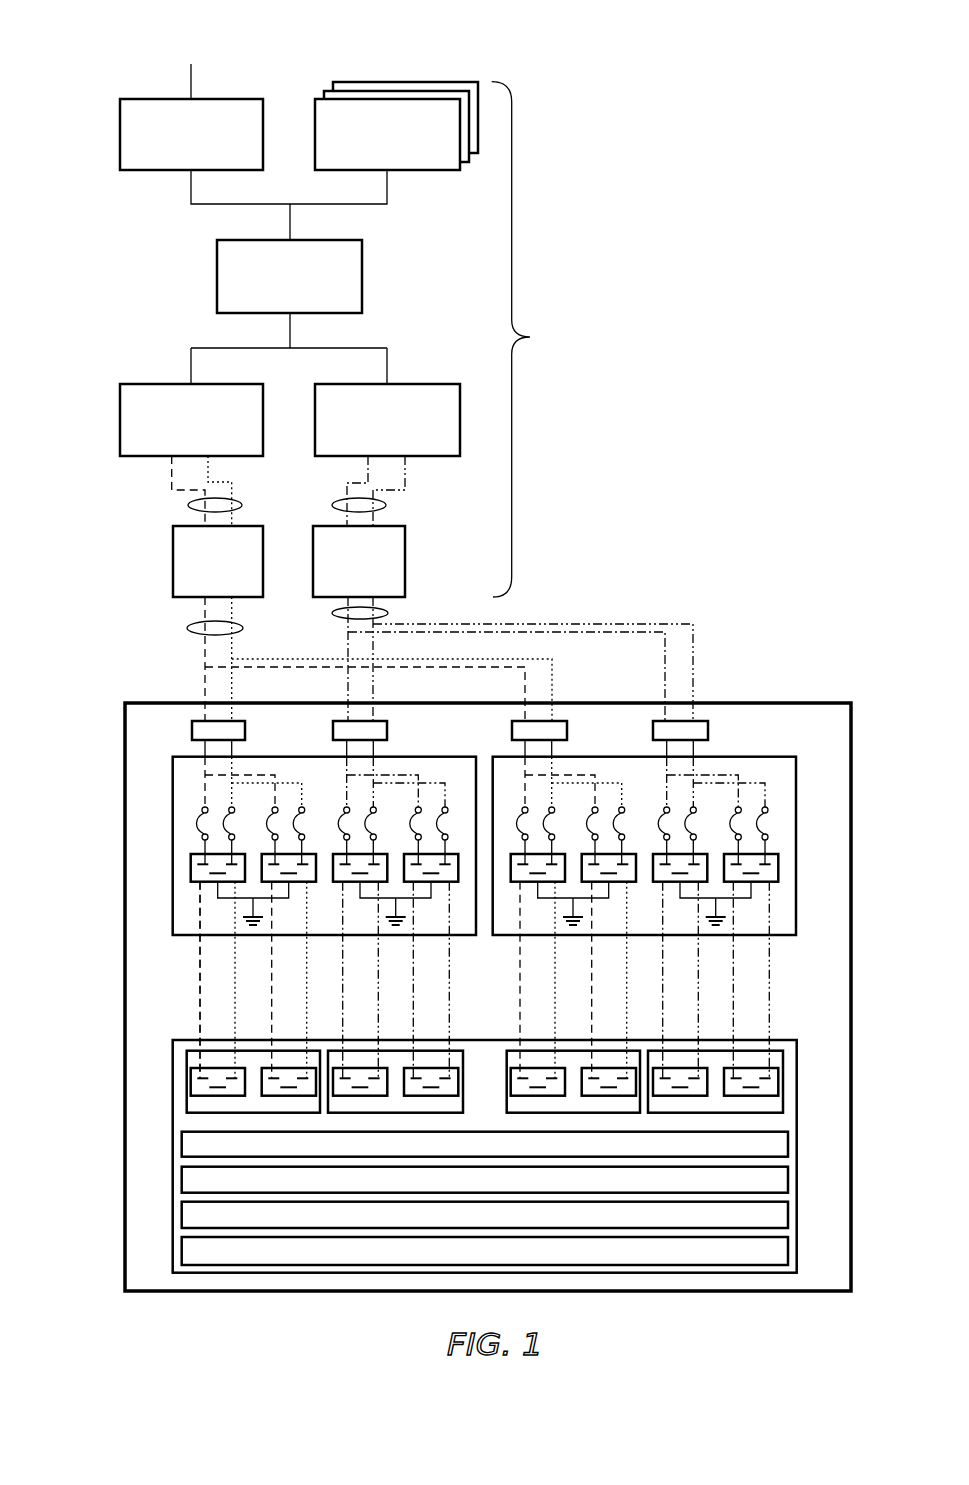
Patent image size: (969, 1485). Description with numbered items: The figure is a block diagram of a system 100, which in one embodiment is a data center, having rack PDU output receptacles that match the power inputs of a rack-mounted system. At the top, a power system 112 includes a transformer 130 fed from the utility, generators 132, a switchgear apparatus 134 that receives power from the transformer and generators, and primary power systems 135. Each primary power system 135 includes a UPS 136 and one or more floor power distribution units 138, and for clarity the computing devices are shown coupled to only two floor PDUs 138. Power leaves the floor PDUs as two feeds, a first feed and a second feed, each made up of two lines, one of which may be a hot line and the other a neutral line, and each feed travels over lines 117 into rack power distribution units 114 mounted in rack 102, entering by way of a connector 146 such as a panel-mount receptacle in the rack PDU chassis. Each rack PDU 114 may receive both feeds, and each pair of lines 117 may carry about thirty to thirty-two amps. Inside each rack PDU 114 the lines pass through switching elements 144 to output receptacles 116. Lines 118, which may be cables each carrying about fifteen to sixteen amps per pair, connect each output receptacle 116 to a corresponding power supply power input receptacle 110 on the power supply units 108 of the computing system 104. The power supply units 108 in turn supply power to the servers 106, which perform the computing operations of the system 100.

The system 100 is at (573, 72).
The rack 102 is at (797, 703).
The computing system 104 is at (485, 1162).
The servers 106 is at (485, 1233).
The power supply units 108 is at (462, 1077).
The power supply power input receptacles 110 is at (191, 1075).
The power system 112 is at (532, 339).
The rack power distribution units 114 is at (462, 826).
The output receptacles 116 is at (191, 868).
The lines 117 is at (157, 687).
The lines 118 is at (198, 953).
The transformer 130 is at (191, 134).
The generators 132 is at (396, 126).
The switchgear apparatus 134 is at (362, 277).
The primary power systems 135 is at (433, 363).
The UPS 136 is at (137, 362).
The floor power distribution units 138 is at (158, 550).
The circuit breaker / switch 144 is at (197, 822).
The connector 146 is at (245, 730).